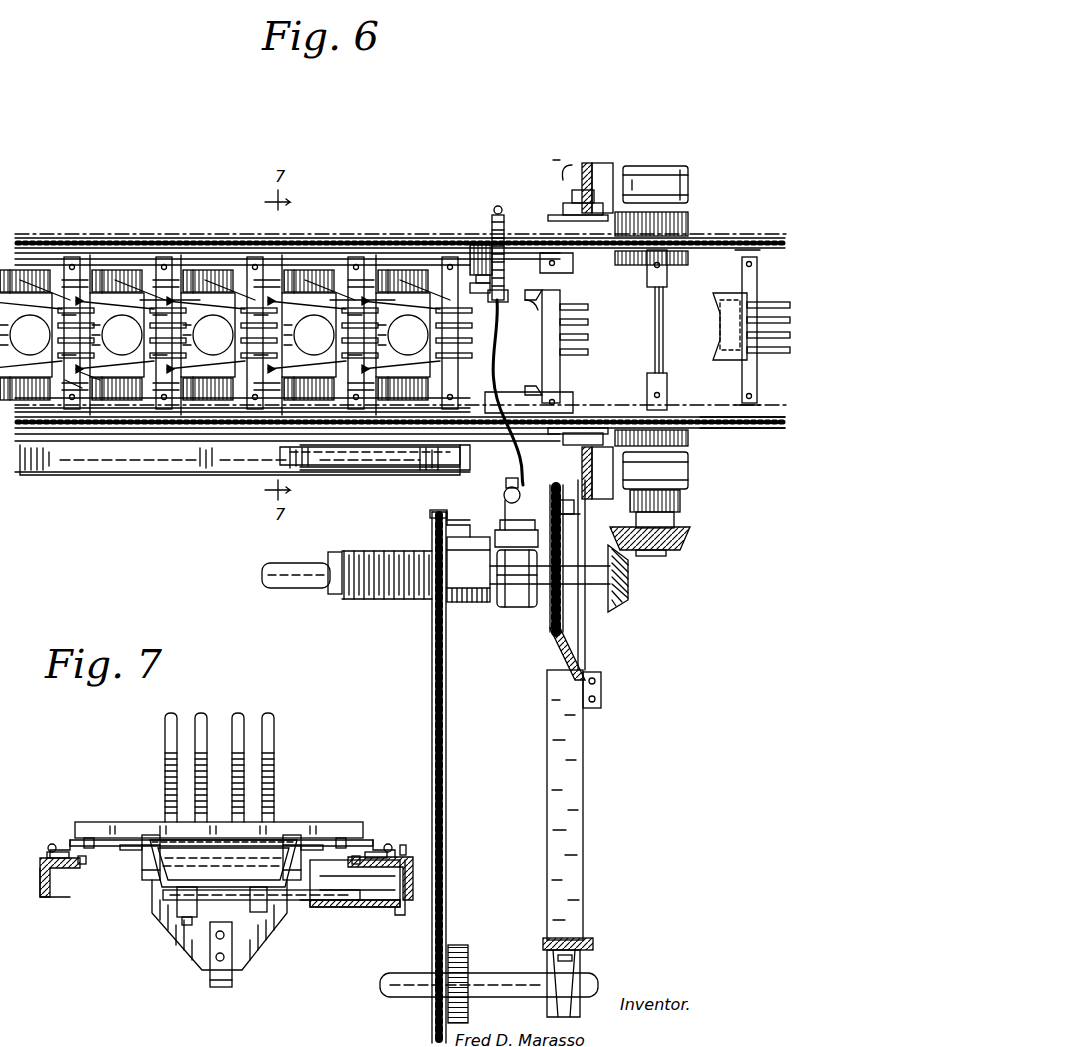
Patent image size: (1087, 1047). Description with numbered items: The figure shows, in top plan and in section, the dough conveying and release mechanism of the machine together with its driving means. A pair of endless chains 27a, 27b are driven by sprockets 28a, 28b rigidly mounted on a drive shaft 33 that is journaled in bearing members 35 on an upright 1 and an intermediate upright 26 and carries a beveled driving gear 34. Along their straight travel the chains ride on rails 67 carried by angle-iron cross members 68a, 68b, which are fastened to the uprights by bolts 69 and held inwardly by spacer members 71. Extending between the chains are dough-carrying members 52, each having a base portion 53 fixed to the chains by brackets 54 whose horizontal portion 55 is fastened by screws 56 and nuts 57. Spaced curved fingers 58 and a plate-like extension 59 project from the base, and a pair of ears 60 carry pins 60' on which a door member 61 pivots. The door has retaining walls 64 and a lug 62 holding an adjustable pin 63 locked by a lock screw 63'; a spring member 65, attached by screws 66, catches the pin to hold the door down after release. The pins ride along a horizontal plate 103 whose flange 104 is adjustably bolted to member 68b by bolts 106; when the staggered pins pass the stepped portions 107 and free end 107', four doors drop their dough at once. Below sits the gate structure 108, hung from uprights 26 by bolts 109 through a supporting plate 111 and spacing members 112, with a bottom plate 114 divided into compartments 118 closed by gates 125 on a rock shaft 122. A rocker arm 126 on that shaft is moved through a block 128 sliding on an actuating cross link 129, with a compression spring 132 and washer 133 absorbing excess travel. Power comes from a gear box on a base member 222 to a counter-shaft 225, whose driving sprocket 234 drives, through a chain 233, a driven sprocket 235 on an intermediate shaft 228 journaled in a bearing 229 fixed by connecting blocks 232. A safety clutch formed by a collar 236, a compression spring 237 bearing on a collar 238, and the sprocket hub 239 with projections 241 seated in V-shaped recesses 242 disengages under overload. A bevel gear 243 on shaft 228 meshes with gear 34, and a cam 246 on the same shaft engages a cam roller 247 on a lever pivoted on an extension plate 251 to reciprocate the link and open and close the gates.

In FIG. 6, the upright 1 is at (585, 920).
In FIG. 6, the intermediate upright 26 is at (560, 460).
In FIG. 6, the endless chain 27a is at (718, 238).
In FIG. 7, the endless chain 27a is at (48, 845).
In FIG. 6, the endless chain 27b is at (735, 428).
In FIG. 7, the endless chain 27b is at (388, 845).
In FIG. 6, the driving sprocket 28a is at (708, 258).
In FIG. 6, the driving sprocket 28b is at (705, 410).
In FIG. 6, the drive shaft 33 is at (664, 338).
In FIG. 6, the beveled driving gear 34 is at (650, 550).
In FIG. 6, the bearing member 35 is at (665, 170).
In FIG. 6, the dough-carrying member 52 is at (533, 340).
In FIG. 7, the dough-carrying member 52 is at (290, 780).
In FIG. 7, the base portion 53 is at (128, 822).
In FIG. 7, the bracket 54 is at (55, 865).
In FIG. 7, the horizontally extending portion 55 is at (98, 840).
In FIG. 7, the screw 56 is at (89, 838).
In FIG. 7, the nut 57 is at (83, 864).
In FIG. 6, the curved finger 58 is at (588, 350).
In FIG. 7, the curved finger 58 is at (270, 712).
In FIG. 7, the plate-like extension 59 is at (250, 948).
In FIG. 7, the ear 60 is at (223, 851).
In FIG. 7, the pin 60' is at (216, 859).
In FIG. 6, the door member 61 is at (255, 312).
In FIG. 7, the door member 61 is at (240, 858).
In FIG. 7, the lug 62 is at (177, 905).
In FIG. 6, the pin 63 is at (231, 434).
In FIG. 7, the pin 63 is at (261, 909).
In FIG. 7, the lock screw 63' is at (157, 938).
In FIG. 7, the retaining wall 64 is at (223, 863).
In FIG. 7, the spring member 65 is at (215, 978).
In FIG. 7, the screw 66 is at (215, 957).
In FIG. 7, the rail 67 is at (55, 852).
In FIG. 6, the cross member 68a is at (385, 270).
In FIG. 7, the cross member 68a is at (35, 885).
In FIG. 6, the cross member 68b is at (222, 395).
In FIG. 7, the cross member 68b is at (355, 883).
In FIG. 6, the bolt 69 is at (573, 198).
In FIG. 6, the spacer member 71 is at (540, 218).
In FIG. 6, the plate 103 is at (150, 412).
In FIG. 7, the plate 103 is at (365, 908).
In FIG. 7, the flange 104 is at (405, 912).
In FIG. 7, the bolt 106 is at (413, 845).
In FIG. 6, the stepped portion 107 is at (242, 456).
In FIG. 6, the free end 107' is at (385, 470).
In FIG. 6, the gate structure 108 is at (163, 483).
In FIG. 6, the bolt 109 is at (510, 493).
In FIG. 6, the supporting plate 111 is at (372, 456).
In FIG. 6, the spacing member 112 is at (520, 476).
In FIG. 6, the bottom plate 114 is at (350, 470).
In FIG. 6, the compartment 118 is at (40, 280).
In FIG. 6, the rock shaft 122 is at (477, 293).
In FIG. 6, the gate 125 is at (25, 275).
In FIG. 6, the rocker arm 126 is at (475, 247).
In FIG. 6, the block 128 is at (530, 309).
In FIG. 6, the actuating cross link 129 is at (500, 350).
In FIG. 6, the compression spring 132 is at (492, 225).
In FIG. 6, the washer 133 is at (497, 210).
In FIG. 6, the base member 222 is at (570, 960).
In FIG. 6, the counter-shaft 225 is at (495, 970).
In FIG. 6, the intermediate shaft 228 is at (300, 588).
In FIG. 6, the bearing 229 is at (518, 607).
In FIG. 6, the connecting block 232 is at (510, 530).
In FIG. 6, the chain 233 is at (447, 700).
In FIG. 6, the driving sprocket 234 is at (456, 945).
In FIG. 6, the driven sprocket 235 is at (438, 600).
In FIG. 6, the collar 236 is at (485, 605).
In FIG. 6, the compression spring 237 is at (386, 600).
In FIG. 6, the collar 238 is at (337, 594).
In FIG. 6, the hub 239 is at (452, 530).
In FIG. 6, the projection 241 is at (468, 570).
In FIG. 6, the V-shaped recess 242 is at (440, 530).
In FIG. 6, the bevel gear 243 is at (630, 583).
In FIG. 6, the cam 246 is at (560, 625).
In FIG. 6, the cam roller 247 is at (620, 543).
In FIG. 6, the extension plate 251 is at (580, 505).